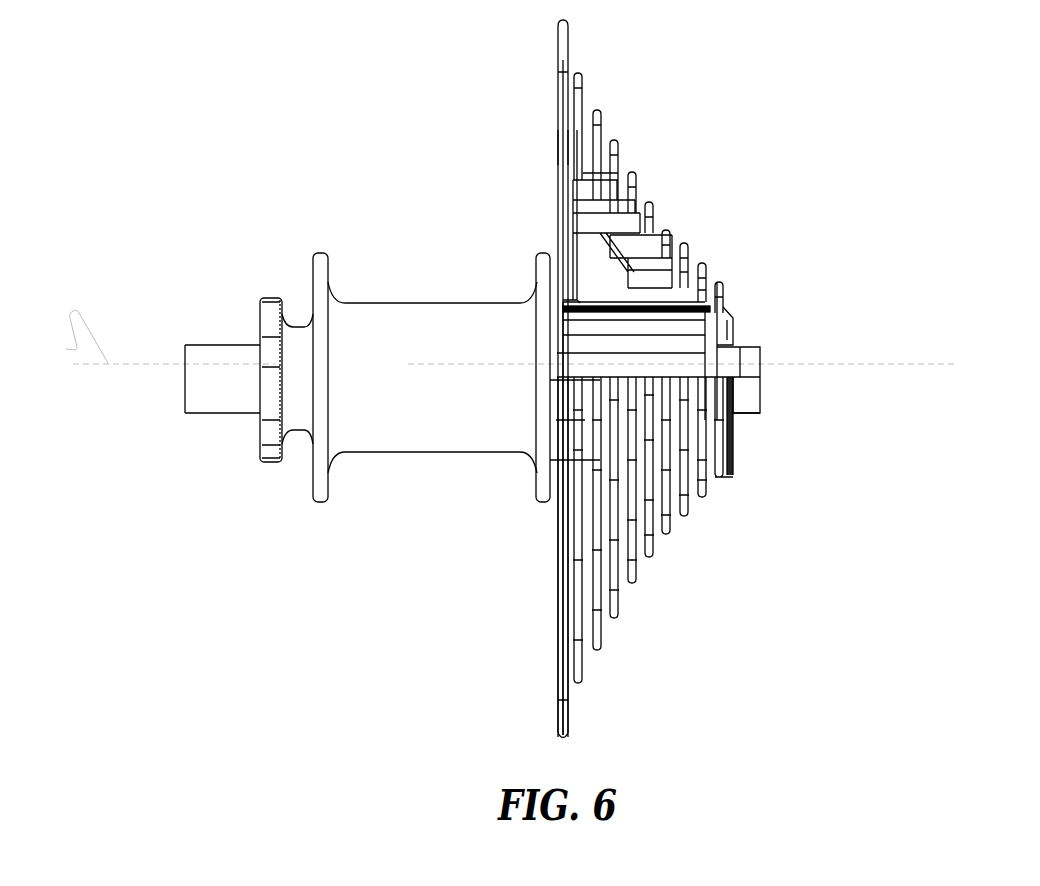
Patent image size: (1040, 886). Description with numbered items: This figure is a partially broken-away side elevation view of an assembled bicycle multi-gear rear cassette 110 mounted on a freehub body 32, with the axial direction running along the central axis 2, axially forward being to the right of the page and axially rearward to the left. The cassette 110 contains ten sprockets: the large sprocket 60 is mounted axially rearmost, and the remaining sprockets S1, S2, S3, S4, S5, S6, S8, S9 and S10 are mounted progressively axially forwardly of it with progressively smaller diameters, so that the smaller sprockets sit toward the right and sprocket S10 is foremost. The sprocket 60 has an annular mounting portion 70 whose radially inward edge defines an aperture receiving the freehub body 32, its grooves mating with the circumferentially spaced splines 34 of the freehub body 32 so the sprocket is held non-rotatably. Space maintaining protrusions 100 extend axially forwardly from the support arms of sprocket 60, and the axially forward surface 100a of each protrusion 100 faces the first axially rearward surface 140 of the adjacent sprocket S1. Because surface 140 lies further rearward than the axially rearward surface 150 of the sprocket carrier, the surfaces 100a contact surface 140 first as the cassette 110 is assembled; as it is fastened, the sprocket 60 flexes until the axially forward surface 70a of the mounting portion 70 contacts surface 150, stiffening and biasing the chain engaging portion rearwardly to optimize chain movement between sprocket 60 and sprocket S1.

The central axis 2 is at (66, 349).
The sprocket 60 is at (555, 48).
The space maintaining protrusion 100 is at (568, 110).
The axially forward surface of space maintaining protrusion 100a is at (553, 146).
The first axially rearward surface of sprocket S1 140 is at (553, 147).
The axially rearward surface of sprocket carrier 150 is at (578, 297).
The mounting portion 70 is at (568, 262).
The axially forward surface of mounting portion 70a is at (580, 292).
The freehub body 32 is at (655, 318).
The splines 34 is at (692, 323).
The assembled cassette 110 is at (772, 456).
The sprocket S1 is at (580, 683).
The sprocket S2 is at (598, 651).
The sprocket S3 is at (615, 619).
The sprocket S4 is at (632, 584).
The sprocket S5 is at (650, 558).
The sprocket S6 is at (667, 535).
The sprocket S8 is at (688, 517).
The sprocket S9 is at (706, 498).
The sprocket S10 is at (723, 480).